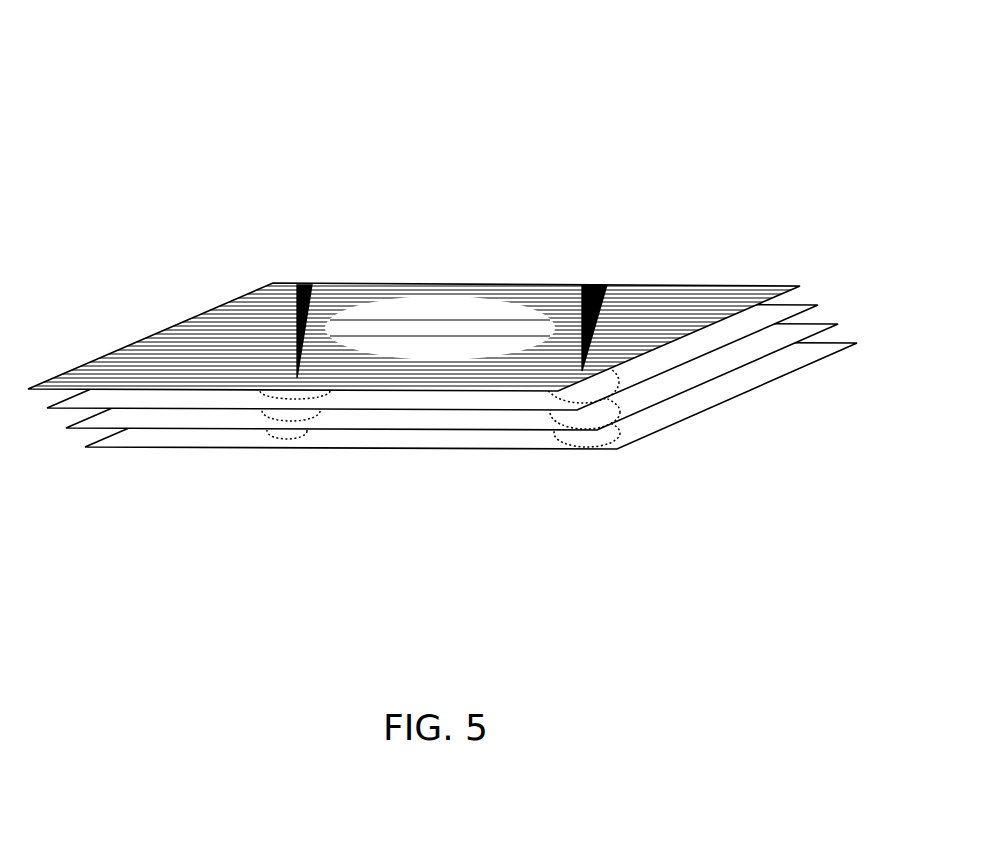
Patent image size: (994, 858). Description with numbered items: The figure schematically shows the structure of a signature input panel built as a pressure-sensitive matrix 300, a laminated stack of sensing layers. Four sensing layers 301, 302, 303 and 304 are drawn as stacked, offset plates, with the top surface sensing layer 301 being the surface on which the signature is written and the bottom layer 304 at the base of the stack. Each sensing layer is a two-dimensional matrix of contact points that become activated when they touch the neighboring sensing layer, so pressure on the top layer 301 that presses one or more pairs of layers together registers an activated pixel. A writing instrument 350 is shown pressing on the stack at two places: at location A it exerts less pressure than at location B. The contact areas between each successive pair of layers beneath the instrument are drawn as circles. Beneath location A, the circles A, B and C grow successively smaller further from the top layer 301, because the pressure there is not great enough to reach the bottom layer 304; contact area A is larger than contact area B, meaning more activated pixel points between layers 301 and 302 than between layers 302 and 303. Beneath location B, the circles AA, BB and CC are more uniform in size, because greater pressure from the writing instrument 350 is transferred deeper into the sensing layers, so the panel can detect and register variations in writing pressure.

The pressure-sensitive matrix 300 is at (453, 160).
The top surface sensing layer 301 is at (762, 295).
The sensing layer 302 is at (787, 307).
The sensing layer 303 is at (797, 332).
The bottom sensing layer 304 is at (823, 352).
The writing instrument 350 is at (307, 257).
The location A / contact area A is at (197, 473).
The location B / contact area B is at (220, 487).
The contact area C is at (293, 438).
The contact area AA is at (570, 392).
The contact area BB is at (582, 417).
The contact area CC is at (593, 438).